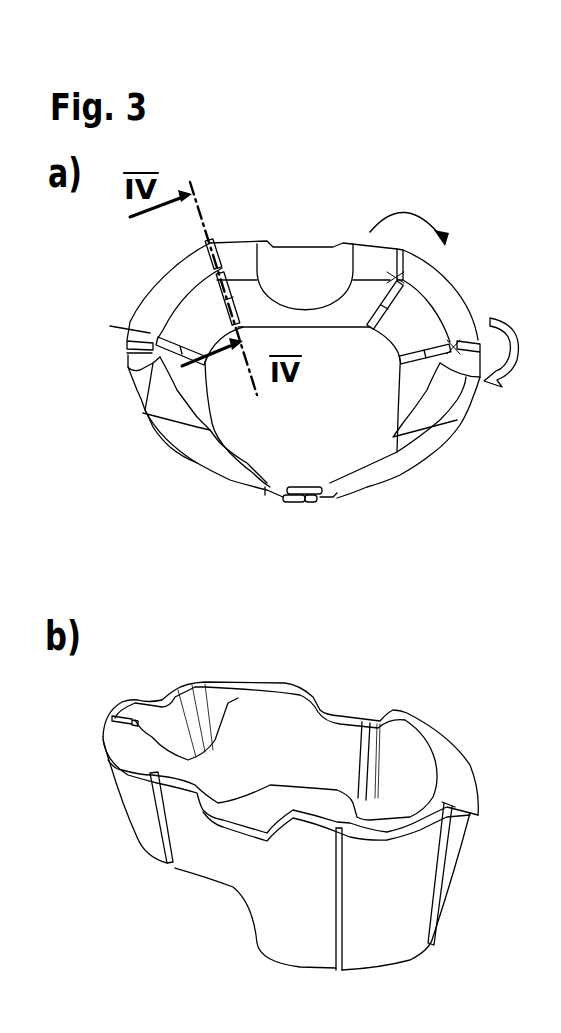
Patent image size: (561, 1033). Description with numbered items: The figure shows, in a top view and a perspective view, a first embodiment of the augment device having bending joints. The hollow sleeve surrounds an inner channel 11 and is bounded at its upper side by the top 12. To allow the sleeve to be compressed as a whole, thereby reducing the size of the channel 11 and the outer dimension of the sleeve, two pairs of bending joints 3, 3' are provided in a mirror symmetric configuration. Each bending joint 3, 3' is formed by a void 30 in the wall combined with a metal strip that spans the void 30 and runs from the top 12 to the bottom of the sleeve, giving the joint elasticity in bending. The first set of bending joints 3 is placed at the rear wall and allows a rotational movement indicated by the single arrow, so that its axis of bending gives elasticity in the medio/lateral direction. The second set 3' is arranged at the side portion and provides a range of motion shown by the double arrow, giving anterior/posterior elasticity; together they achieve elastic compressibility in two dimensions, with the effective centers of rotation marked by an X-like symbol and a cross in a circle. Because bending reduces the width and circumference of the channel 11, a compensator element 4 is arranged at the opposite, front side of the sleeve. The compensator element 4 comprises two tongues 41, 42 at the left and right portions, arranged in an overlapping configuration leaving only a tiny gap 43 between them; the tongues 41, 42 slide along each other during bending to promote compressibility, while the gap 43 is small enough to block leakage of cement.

The bending joints 3 is at (251, 592).
The bending joints 3' is at (285, 603).
The compensator element 4 is at (292, 643).
The tongue 41 is at (287, 503).
The tongue 42 is at (323, 503).
The gap 43 is at (303, 503).
The channel 11 is at (340, 442).
The top 12 is at (182, 265).
The void 30 is at (112, 320).